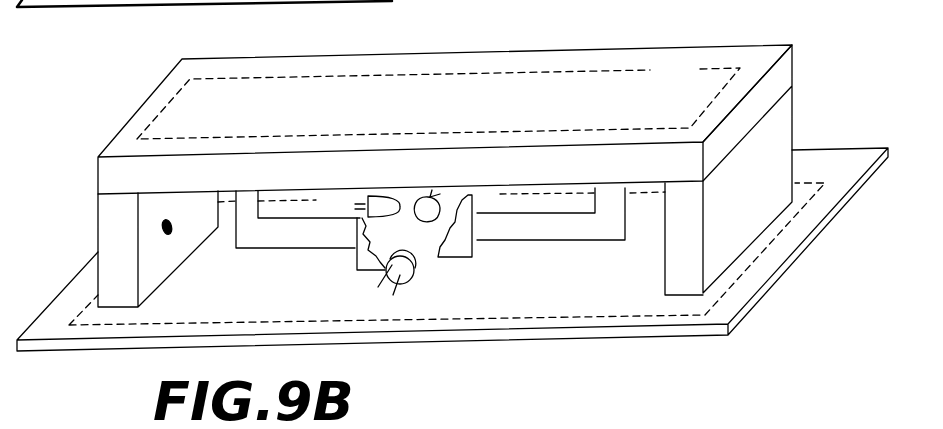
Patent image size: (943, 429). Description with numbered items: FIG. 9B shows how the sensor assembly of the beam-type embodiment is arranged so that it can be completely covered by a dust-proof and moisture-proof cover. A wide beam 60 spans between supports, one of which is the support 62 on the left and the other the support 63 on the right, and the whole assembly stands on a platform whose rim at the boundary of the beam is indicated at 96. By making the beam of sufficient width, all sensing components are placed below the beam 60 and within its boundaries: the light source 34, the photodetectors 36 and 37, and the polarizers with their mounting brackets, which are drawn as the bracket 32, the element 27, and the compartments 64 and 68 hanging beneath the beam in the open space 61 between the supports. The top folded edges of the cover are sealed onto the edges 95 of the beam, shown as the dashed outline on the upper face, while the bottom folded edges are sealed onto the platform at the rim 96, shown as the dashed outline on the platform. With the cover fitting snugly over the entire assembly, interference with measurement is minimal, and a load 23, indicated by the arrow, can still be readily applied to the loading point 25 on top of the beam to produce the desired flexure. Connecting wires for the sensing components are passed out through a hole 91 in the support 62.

The load 23 is at (427, 110).
The loading point 25 is at (459, 109).
The prism 27 is at (477, 237).
The mounting bracket 32 is at (348, 253).
The light source 34 is at (410, 219).
The photodetector 36 is at (417, 277).
The photodetector 37 is at (359, 201).
The beam 60 is at (445, 119).
The cavity 61 is at (244, 285).
The support 62 is at (158, 249).
The right side wall 63 is at (747, 169).
The left compartment 64 is at (298, 221).
The right compartment 68 is at (551, 216).
The hole 91 is at (187, 227).
The edges of the beam 95 is at (438, 96).
The rim of boundary of the beam on the platform 96 is at (452, 249).